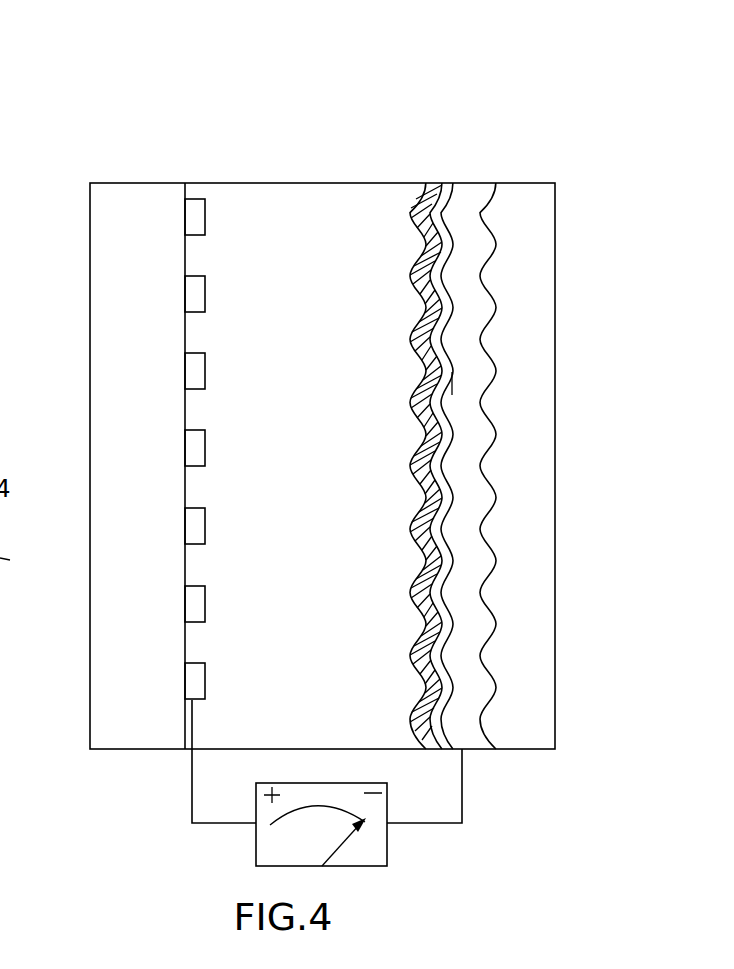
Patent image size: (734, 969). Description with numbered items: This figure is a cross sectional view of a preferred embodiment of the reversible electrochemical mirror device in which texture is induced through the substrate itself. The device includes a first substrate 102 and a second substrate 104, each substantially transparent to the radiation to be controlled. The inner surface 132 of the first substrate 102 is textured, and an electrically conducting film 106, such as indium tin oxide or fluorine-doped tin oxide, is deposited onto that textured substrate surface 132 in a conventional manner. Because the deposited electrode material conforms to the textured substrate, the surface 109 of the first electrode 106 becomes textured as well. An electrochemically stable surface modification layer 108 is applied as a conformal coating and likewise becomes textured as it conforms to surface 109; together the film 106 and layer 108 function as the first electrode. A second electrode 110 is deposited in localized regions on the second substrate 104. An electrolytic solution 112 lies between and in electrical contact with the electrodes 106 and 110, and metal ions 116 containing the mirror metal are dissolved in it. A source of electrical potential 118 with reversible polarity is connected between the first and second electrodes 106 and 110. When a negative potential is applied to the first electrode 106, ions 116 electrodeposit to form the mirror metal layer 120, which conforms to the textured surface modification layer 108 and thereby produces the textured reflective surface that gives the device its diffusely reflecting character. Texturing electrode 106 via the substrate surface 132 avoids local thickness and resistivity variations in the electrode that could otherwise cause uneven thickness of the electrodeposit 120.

The first substrate 102 is at (525, 230).
The second substrate 104 is at (122, 292).
The electrically conducting film 106 is at (462, 192).
The surface modification layer 108 is at (452, 190).
The surface of first electrode 109 is at (454, 383).
The second electrode 110 is at (197, 213).
The electrolytic solution 112 is at (326, 213).
The metal ions 116 is at (355, 325).
The source of electrical potential 118 is at (256, 856).
The mirror metal layer 120 is at (431, 195).
The inner surface of first substrate 132 is at (476, 467).